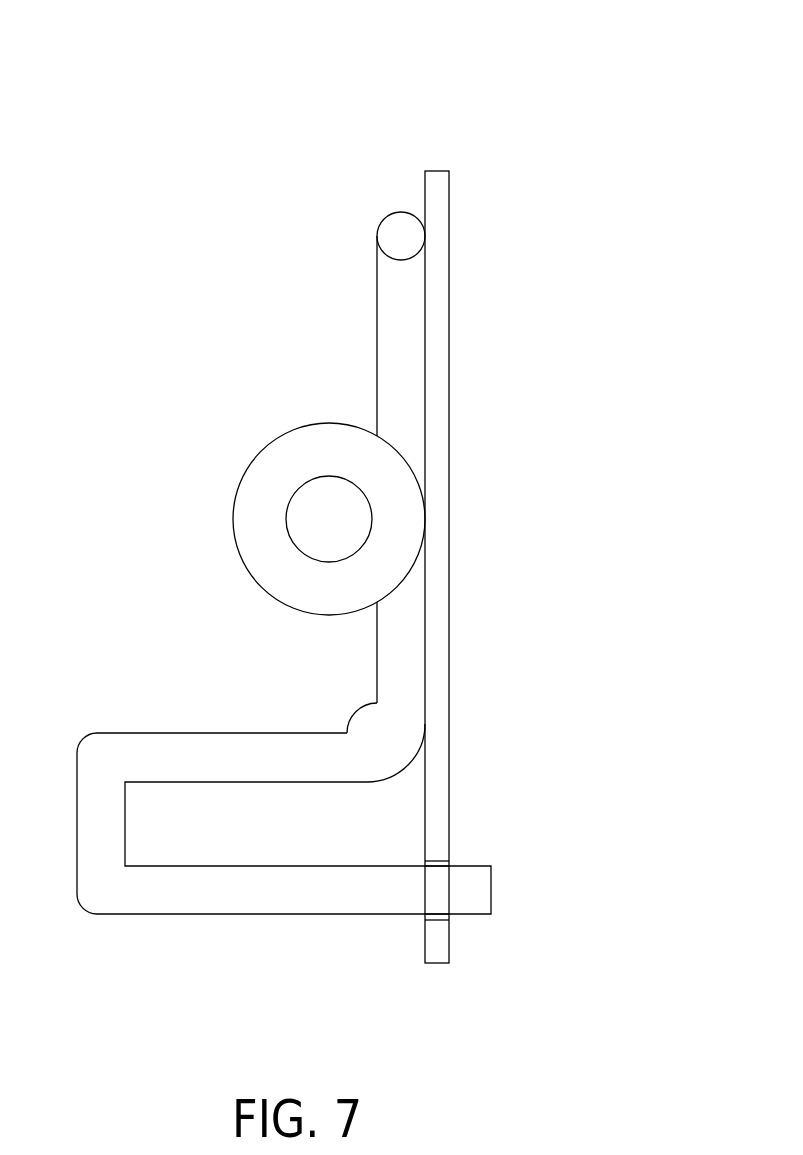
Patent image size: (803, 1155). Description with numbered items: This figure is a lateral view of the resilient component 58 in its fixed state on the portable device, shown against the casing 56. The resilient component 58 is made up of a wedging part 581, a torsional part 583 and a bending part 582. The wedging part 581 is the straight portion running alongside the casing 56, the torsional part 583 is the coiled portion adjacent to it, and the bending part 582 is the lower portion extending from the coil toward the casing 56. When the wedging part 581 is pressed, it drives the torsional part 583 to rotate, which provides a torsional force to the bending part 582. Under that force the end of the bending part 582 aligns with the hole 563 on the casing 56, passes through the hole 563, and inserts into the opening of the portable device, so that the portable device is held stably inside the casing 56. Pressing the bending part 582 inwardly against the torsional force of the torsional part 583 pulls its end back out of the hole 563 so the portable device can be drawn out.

The resilient component 58 is at (560, 118).
The casing 56 is at (442, 303).
The wedging part 581 is at (387, 342).
The torsional part 583 is at (260, 477).
The bending part 582 is at (187, 900).
The hole 563 is at (450, 863).